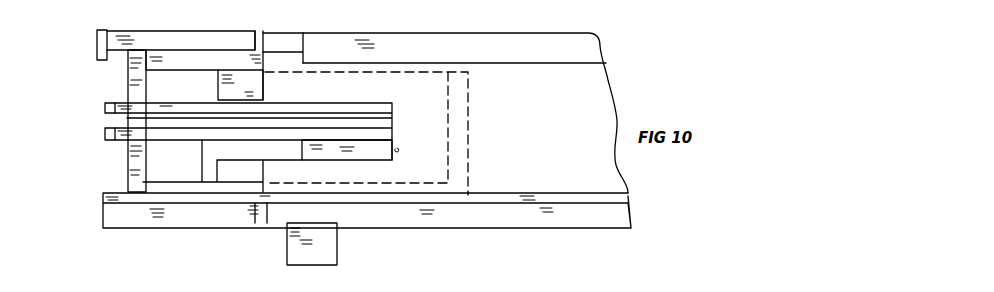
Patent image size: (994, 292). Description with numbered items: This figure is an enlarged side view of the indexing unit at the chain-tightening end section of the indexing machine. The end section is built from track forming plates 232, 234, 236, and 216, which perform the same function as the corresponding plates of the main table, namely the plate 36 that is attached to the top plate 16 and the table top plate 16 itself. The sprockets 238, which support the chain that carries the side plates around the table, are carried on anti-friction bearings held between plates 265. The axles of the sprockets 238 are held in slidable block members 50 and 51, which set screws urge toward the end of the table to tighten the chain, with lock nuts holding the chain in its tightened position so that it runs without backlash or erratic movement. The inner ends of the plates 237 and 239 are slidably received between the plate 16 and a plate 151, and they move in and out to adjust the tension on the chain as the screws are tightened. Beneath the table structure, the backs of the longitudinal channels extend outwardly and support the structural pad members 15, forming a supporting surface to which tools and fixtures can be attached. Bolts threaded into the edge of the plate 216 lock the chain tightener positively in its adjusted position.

The track forming plate 236 is at (95, 48).
The track forming plate 216 is at (190, 37).
The slidable block member 50 is at (215, 60).
The top plate 16 is at (293, 33).
The plate 36 is at (407, 52).
The track forming plate 232 is at (128, 72).
The plate 237 is at (180, 62).
The plate 265 is at (260, 78).
The sprocket 238 is at (108, 113).
The track forming plate 234 is at (148, 215).
The plate 239 is at (263, 197).
The slidable block member 51 is at (368, 198).
The plate 151 is at (423, 220).
The structural pad member 15 is at (323, 257).